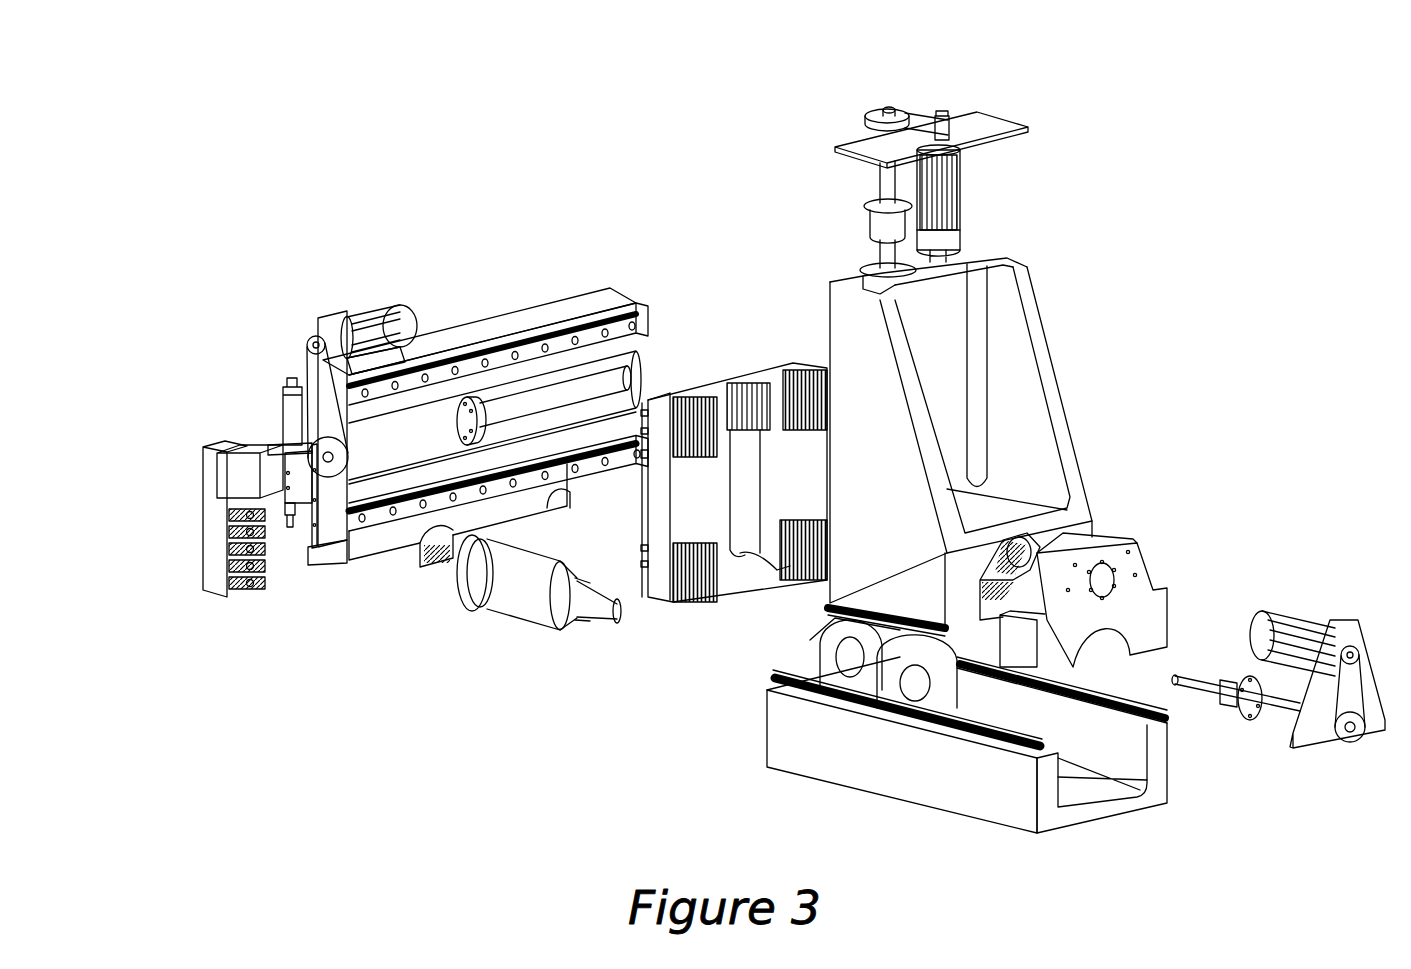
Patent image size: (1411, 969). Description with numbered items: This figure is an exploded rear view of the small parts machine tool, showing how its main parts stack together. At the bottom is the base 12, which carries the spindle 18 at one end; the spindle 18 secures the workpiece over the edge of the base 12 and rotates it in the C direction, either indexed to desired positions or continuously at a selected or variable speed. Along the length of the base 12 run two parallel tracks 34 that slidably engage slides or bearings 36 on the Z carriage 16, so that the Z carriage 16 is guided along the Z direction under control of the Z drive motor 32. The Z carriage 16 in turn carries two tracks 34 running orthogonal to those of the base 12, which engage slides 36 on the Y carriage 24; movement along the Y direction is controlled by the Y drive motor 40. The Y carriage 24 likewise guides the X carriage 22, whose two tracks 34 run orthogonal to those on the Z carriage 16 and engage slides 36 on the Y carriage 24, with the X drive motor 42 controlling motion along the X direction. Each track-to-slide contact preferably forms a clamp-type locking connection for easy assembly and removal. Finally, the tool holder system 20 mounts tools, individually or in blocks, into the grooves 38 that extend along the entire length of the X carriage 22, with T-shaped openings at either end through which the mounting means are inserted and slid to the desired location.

The base 12 is at (782, 738).
The Z carriage 16 is at (1047, 338).
The spindle 18 is at (470, 610).
The tool holder system 20 is at (206, 410).
The X carriage 22 is at (563, 313).
The Y carriage 24 is at (767, 370).
The Z drive motor 32 is at (1350, 737).
The tracks 34 is at (350, 530).
The slides or bearings 36 is at (680, 617).
The grooves 38 is at (317, 548).
The Y drive motor 40 is at (877, 108).
The X drive motor 42 is at (310, 340).